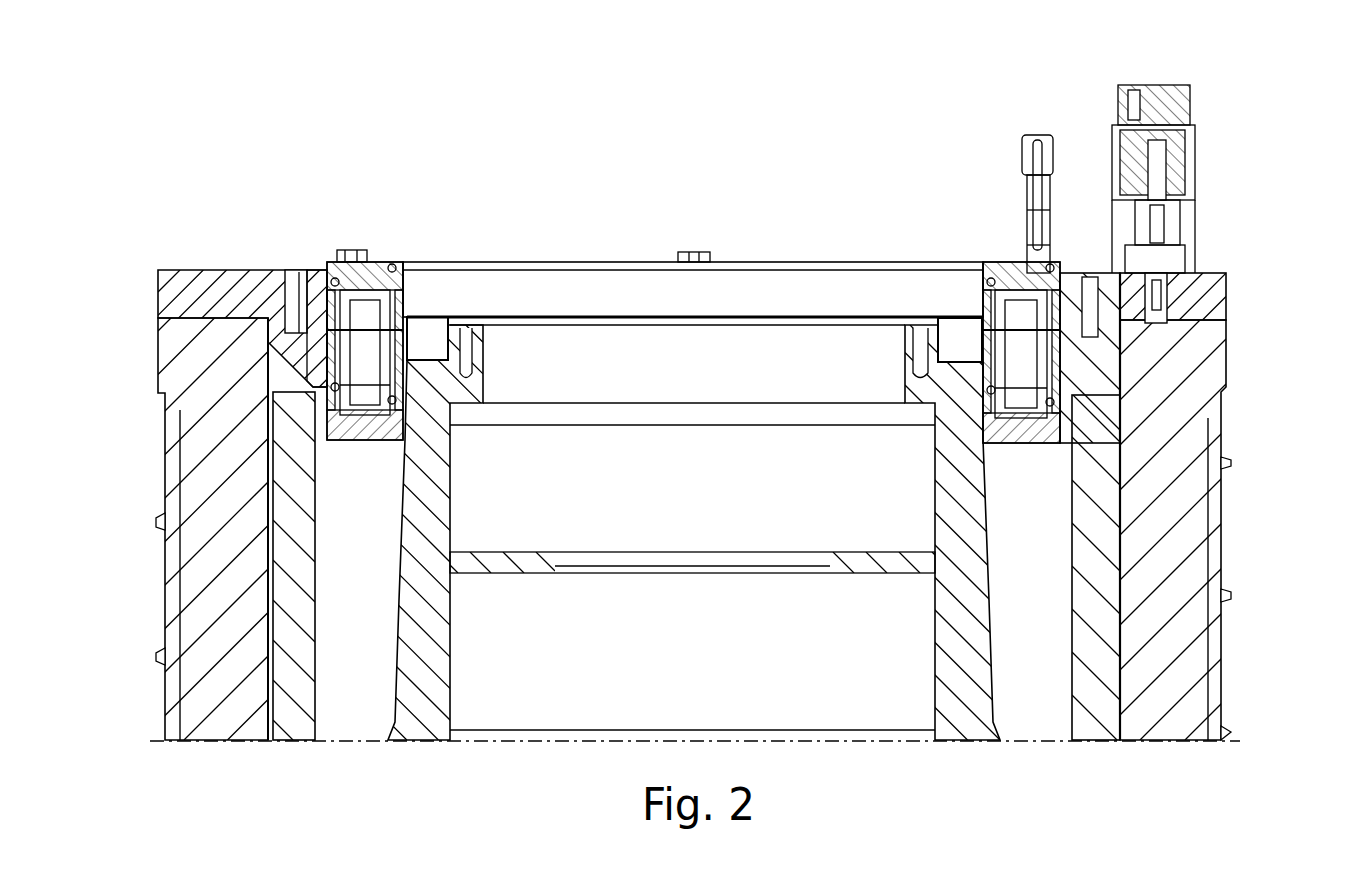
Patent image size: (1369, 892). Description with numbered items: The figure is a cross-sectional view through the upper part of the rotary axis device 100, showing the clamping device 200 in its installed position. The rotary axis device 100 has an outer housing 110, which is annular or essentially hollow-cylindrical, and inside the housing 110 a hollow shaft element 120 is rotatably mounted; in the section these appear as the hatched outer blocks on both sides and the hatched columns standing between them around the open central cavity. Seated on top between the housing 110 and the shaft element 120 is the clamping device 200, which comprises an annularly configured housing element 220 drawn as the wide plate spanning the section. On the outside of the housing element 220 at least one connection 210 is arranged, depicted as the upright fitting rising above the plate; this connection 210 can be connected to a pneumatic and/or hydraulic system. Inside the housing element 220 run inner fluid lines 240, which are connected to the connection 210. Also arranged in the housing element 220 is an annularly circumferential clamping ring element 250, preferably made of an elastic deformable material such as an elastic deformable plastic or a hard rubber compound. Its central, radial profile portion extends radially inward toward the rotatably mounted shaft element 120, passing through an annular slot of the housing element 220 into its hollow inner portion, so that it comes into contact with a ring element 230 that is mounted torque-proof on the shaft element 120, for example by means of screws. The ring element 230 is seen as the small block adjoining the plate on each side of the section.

The rotary axis device 100 is at (701, 428).
The outer housing 110 is at (200, 492).
The hollow shaft element 120 is at (432, 715).
The clamping device 200 is at (693, 248).
The connection 210 is at (1035, 133).
The housing element 220 is at (770, 285).
The ring element 230 is at (425, 330).
The inner fluid lines 240 is at (316, 285).
The clamping ring element 250 is at (368, 290).